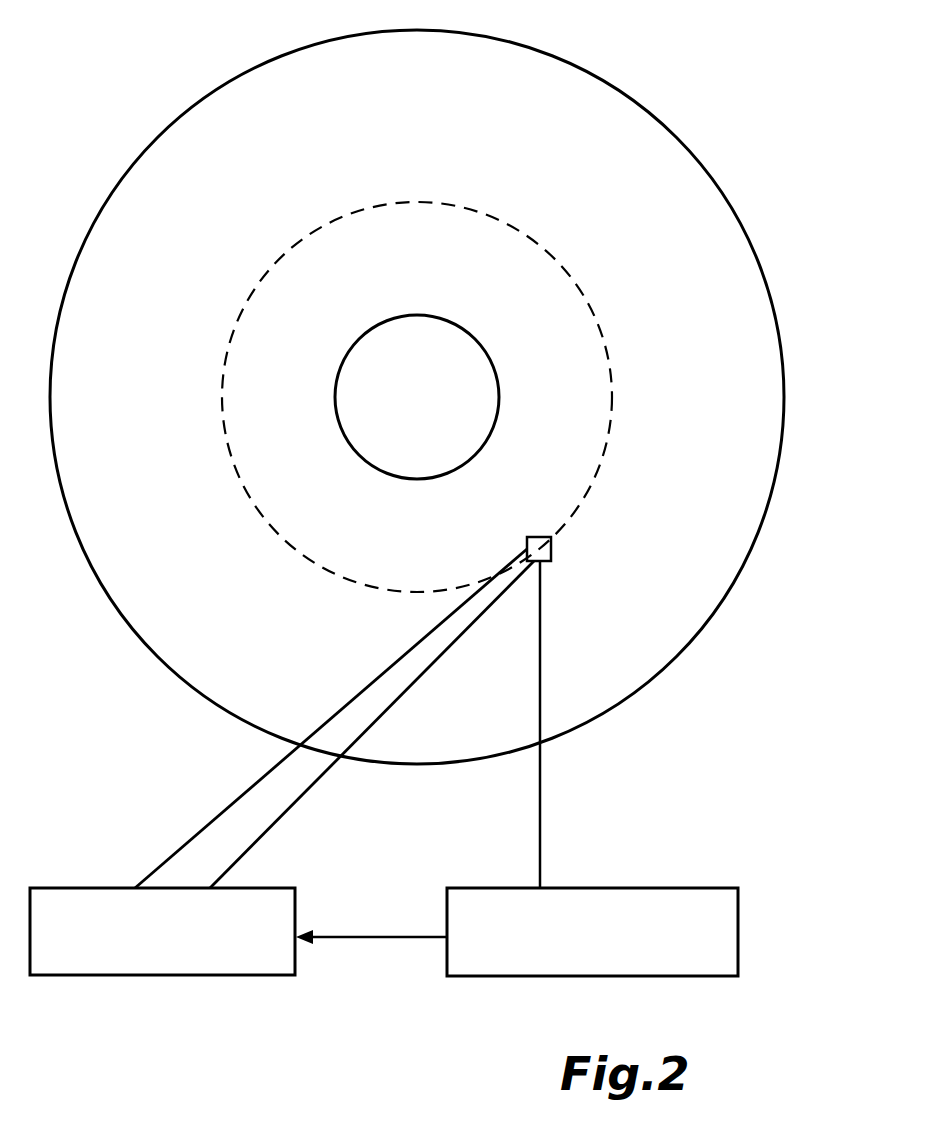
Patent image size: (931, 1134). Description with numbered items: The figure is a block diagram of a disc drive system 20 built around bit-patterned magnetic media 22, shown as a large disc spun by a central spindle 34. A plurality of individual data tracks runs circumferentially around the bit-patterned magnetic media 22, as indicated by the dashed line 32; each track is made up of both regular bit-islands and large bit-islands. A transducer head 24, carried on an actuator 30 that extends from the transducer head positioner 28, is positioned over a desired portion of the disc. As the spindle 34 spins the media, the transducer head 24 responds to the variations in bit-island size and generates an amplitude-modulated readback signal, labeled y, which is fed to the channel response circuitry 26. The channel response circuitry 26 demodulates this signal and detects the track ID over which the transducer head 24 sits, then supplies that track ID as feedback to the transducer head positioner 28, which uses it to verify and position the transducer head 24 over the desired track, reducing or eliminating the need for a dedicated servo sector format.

The disc drive system 20 is at (110, 114).
The bit-patterned magnetic media 22 is at (262, 63).
The transducer head 24 is at (551, 548).
The channel response circuitry 26 is at (738, 902).
The transducer head positioner 28 is at (80, 888).
The actuator 30 is at (374, 683).
The dashed line 32 is at (228, 346).
The spindle 34 is at (457, 327).